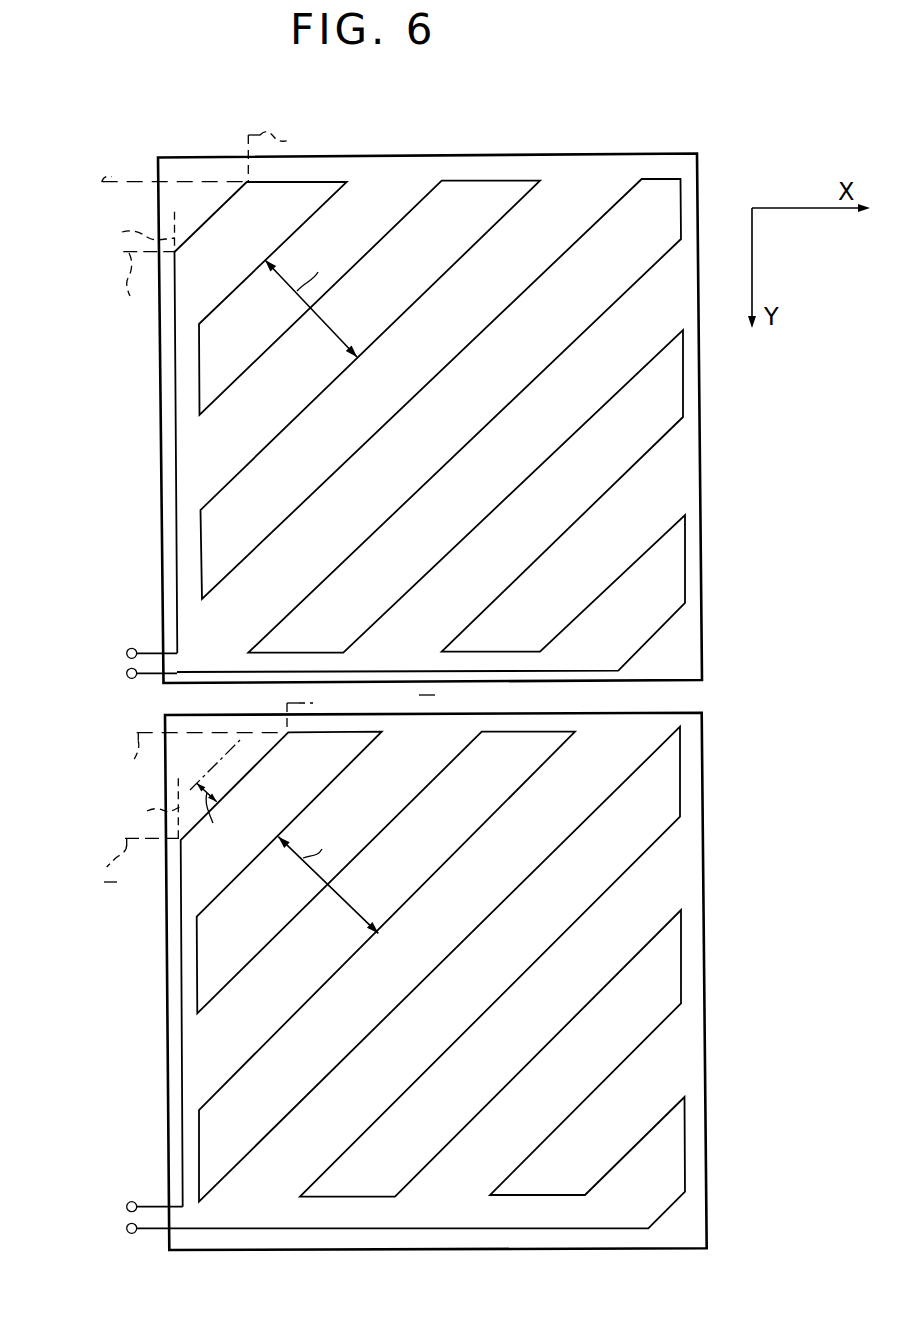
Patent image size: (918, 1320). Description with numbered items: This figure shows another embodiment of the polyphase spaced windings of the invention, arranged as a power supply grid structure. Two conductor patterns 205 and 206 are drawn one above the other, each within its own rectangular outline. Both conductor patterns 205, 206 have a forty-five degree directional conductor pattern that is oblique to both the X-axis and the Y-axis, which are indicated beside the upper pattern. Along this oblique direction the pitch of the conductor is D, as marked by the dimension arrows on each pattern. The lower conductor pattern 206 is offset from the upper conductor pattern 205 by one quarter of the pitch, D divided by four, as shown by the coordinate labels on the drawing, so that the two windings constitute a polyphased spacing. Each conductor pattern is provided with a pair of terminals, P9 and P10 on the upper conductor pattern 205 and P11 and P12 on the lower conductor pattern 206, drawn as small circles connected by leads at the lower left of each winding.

The conductor pattern 205 is at (600, 167).
The conductor pattern 206 is at (695, 755).
The terminal P9 is at (130, 648).
The terminal P10 is at (126, 669).
The terminal P11 is at (130, 1217).
The terminal P12 is at (127, 1228).